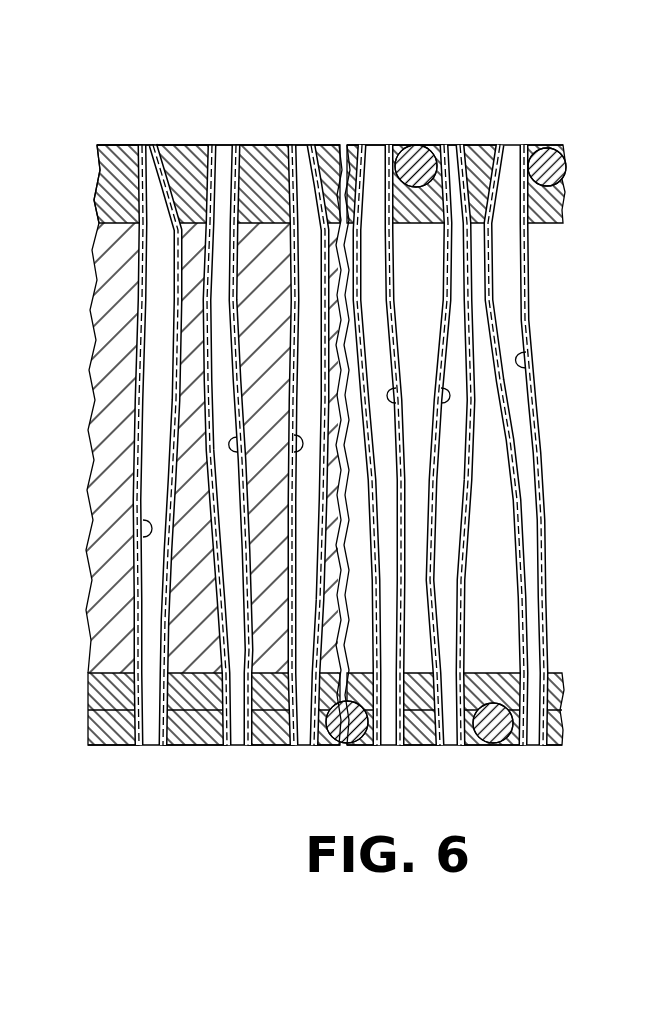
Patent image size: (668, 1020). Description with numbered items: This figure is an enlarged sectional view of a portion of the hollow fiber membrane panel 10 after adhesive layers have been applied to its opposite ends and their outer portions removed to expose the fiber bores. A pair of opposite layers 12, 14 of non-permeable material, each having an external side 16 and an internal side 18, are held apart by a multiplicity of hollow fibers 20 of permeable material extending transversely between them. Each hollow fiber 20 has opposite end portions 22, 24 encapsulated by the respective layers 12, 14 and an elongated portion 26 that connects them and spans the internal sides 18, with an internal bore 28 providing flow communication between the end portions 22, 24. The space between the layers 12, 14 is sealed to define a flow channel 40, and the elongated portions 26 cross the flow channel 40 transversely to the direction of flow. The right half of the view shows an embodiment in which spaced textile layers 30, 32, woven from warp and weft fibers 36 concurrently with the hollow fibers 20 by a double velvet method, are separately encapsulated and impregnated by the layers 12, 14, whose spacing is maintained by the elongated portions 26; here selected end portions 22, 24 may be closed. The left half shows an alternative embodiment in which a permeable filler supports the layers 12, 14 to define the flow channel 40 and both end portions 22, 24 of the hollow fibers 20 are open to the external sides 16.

The hollow fiber membrane panel 10 is at (562, 94).
The layer of non-permeable material 12 is at (122, 226).
The layer of non-permeable material 14 is at (117, 744).
The external side 16 is at (176, 144).
The internal side 18 is at (109, 668).
The hollow fiber 20 is at (124, 439).
The end portion 22 is at (326, 145).
The end portion 24 is at (173, 693).
The elongated portion 26 is at (141, 366).
The internal bore 28 is at (288, 429).
The textile layer 30 is at (400, 131).
The textile layer 32 is at (360, 755).
The weft fiber 36 is at (424, 146).
The flow channel 40 is at (576, 578).